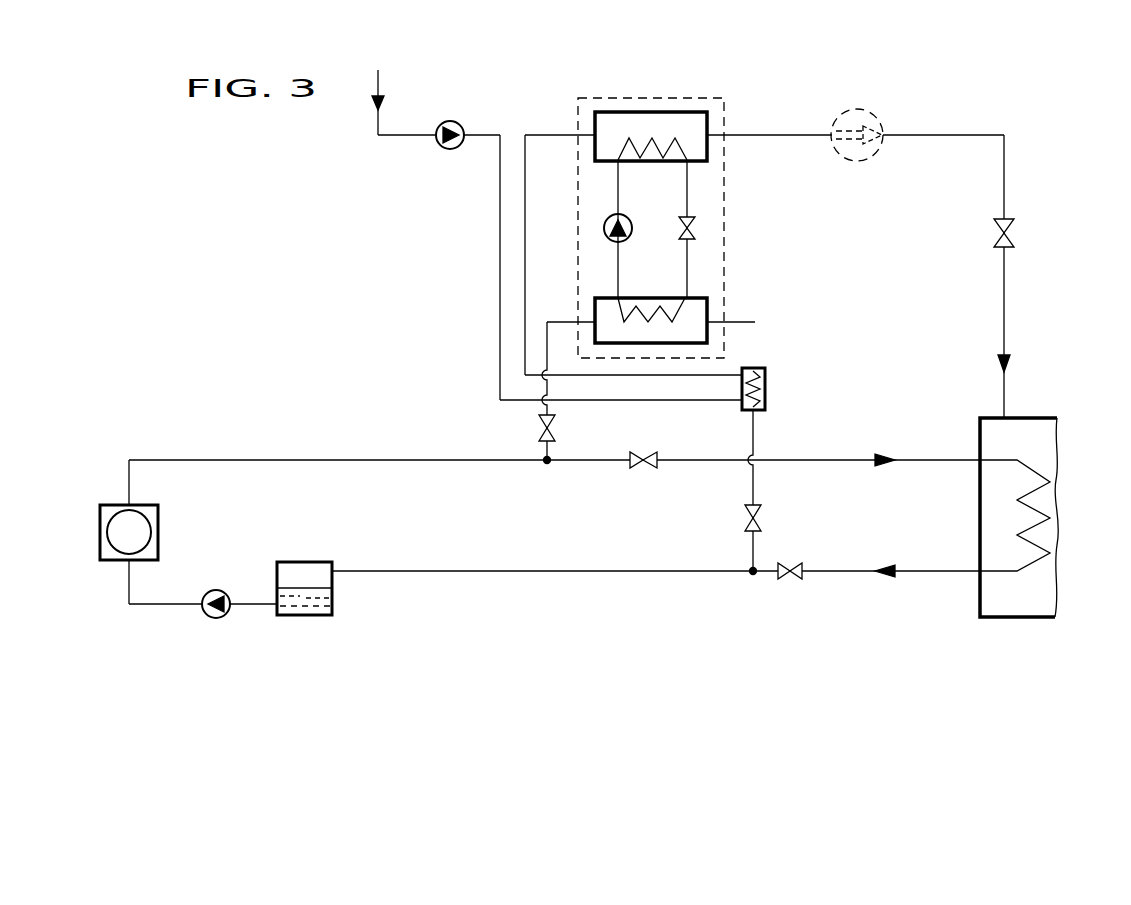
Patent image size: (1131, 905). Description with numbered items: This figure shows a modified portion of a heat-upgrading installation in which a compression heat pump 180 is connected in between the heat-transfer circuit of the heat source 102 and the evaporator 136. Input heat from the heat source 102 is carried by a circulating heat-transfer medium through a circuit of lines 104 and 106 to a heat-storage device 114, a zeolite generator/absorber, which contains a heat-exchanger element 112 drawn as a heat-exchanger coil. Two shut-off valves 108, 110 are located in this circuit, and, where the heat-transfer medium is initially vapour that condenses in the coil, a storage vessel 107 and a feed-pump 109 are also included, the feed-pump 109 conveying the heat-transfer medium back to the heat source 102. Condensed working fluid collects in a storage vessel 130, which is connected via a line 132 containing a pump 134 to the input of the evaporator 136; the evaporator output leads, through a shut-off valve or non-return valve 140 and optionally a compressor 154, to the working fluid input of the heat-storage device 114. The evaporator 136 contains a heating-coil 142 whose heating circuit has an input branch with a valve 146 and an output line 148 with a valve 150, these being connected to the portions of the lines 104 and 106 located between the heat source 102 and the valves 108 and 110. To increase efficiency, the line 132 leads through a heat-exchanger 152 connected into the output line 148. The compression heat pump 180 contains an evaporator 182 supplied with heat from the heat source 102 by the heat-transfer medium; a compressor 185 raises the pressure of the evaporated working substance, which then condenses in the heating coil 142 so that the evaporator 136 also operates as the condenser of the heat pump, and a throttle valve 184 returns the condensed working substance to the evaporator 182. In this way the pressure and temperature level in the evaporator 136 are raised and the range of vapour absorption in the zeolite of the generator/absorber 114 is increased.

The heat source 102 is at (158, 510).
The line 104 is at (376, 460).
The line 106 is at (545, 571).
The storage vessel 107 is at (322, 565).
The shut-off valve 108 is at (643, 468).
The feed-pump 109 is at (227, 615).
The shut-off valve 110 is at (790, 579).
The heat-exchanger element 112 is at (1052, 500).
The heat-storage device 114 is at (1035, 418).
The storage vessel 130 is at (394, 82).
The line 132 is at (498, 249).
The pump 134 is at (448, 150).
The evaporator 136 is at (700, 112).
The shut-off valve or non-return valve 140 is at (1014, 233).
The heating-coil 142 is at (640, 150).
The valve 146 is at (539, 430).
The output line 148 is at (754, 432).
The valve 150 is at (762, 520).
The heat-exchanger 152 is at (766, 380).
The compressor 154 is at (876, 118).
The compression heat pump 180 is at (614, 98).
The evaporator 182 is at (697, 306).
The throttle valve 184 is at (680, 232).
The compressor 185 is at (632, 222).